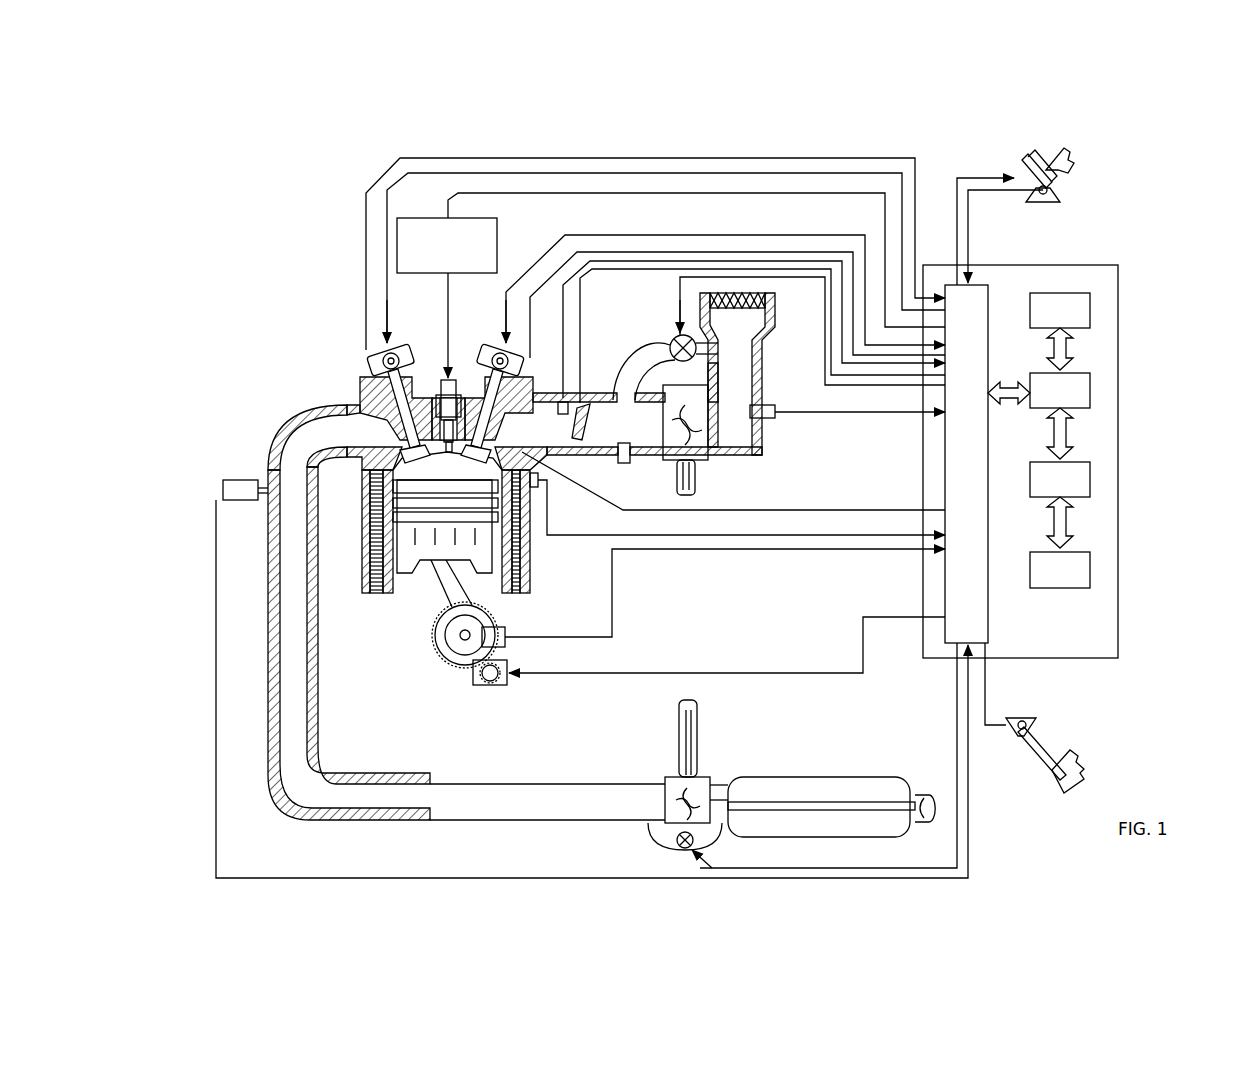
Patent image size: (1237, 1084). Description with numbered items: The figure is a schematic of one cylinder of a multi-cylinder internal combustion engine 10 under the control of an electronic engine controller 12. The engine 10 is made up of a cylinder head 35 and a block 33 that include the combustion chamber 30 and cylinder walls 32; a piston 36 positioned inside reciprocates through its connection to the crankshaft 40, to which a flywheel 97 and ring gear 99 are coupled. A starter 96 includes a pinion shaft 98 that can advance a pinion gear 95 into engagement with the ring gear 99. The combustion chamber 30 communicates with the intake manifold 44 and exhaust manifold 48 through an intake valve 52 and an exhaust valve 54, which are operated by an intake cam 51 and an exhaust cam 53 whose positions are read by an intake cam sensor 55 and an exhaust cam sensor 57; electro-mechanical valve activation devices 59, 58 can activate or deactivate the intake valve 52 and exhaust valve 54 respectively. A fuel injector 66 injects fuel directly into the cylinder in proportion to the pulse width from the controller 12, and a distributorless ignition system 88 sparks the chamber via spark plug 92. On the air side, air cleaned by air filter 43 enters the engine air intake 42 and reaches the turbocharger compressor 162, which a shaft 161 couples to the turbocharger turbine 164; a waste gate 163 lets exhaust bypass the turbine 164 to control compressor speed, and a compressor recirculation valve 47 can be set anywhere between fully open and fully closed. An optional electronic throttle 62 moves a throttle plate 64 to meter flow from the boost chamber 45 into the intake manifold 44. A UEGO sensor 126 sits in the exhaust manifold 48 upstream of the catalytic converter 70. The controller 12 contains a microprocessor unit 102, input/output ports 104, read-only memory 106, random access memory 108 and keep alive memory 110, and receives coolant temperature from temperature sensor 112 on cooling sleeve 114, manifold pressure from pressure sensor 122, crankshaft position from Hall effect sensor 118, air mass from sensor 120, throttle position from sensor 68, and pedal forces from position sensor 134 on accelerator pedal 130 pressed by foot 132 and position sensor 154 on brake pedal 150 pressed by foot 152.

The internal combustion engine 10 is at (302, 337).
The electronic engine controller 12 is at (1116, 266).
The combustion chamber 30 is at (447, 500).
The cylinder walls 32 is at (395, 595).
The block 33 is at (358, 497).
The cylinder head 35 is at (357, 376).
The piston 36 is at (432, 565).
The crankshaft 40 is at (450, 655).
The engine air intake 42 is at (628, 314).
The air filter 43 is at (755, 310).
The intake manifold 44 is at (647, 424).
The boost chamber 45 is at (631, 432).
The compressor recirculation valve 47 is at (672, 340).
The exhaust manifold 48 is at (349, 612).
The intake cam 51 is at (494, 352).
The intake valve 52 is at (486, 432).
The exhaust cam 53 is at (396, 352).
The exhaust valve 54 is at (360, 412).
The intake cam sensor 55 is at (514, 354).
The exhaust cam sensor 57 is at (380, 364).
The valve activation device 58 is at (401, 366).
The valve activation device 59 is at (494, 368).
The electronic throttle 62 is at (585, 430).
The throttle plate 64 is at (608, 438).
The fuel injector 66 is at (540, 480).
The throttle position sensor 68 is at (560, 402).
The catalytic converter 70 is at (760, 777).
The distributorless ignition system 88 is at (410, 218).
The spark plug 92 is at (450, 378).
The pinion gear 95 is at (496, 690).
The starter 96 is at (503, 684).
The flywheel 97 is at (436, 640).
The pinion shaft 98 is at (484, 688).
The ring gear 99 is at (478, 676).
The microprocessor unit 102 is at (1090, 395).
The input/output ports 104 is at (989, 296).
The read-only memory 106 is at (1090, 306).
The random access memory 108 is at (1090, 482).
The keep alive memory 110 is at (1090, 572).
The temperature sensor 112 is at (564, 521).
The cooling sleeve 114 is at (530, 548).
The Hall effect sensor 118 is at (505, 630).
The air mass sensor 120 is at (767, 405).
The pressure sensor 122 is at (618, 458).
The Universal Exhaust Gas Oxygen sensor 126 is at (223, 483).
The accelerator pedal 130 is at (1017, 176).
The human foot 132 is at (1065, 158).
The position sensor 134 is at (1060, 192).
The brake pedal 150 is at (1046, 768).
The foot 152 is at (1073, 756).
The position sensor 154 is at (1016, 720).
The shaft 161 is at (677, 480).
The turbocharger compressor 162 is at (690, 455).
The waste gate 163 is at (678, 846).
The turbocharger turbine 164 is at (665, 780).